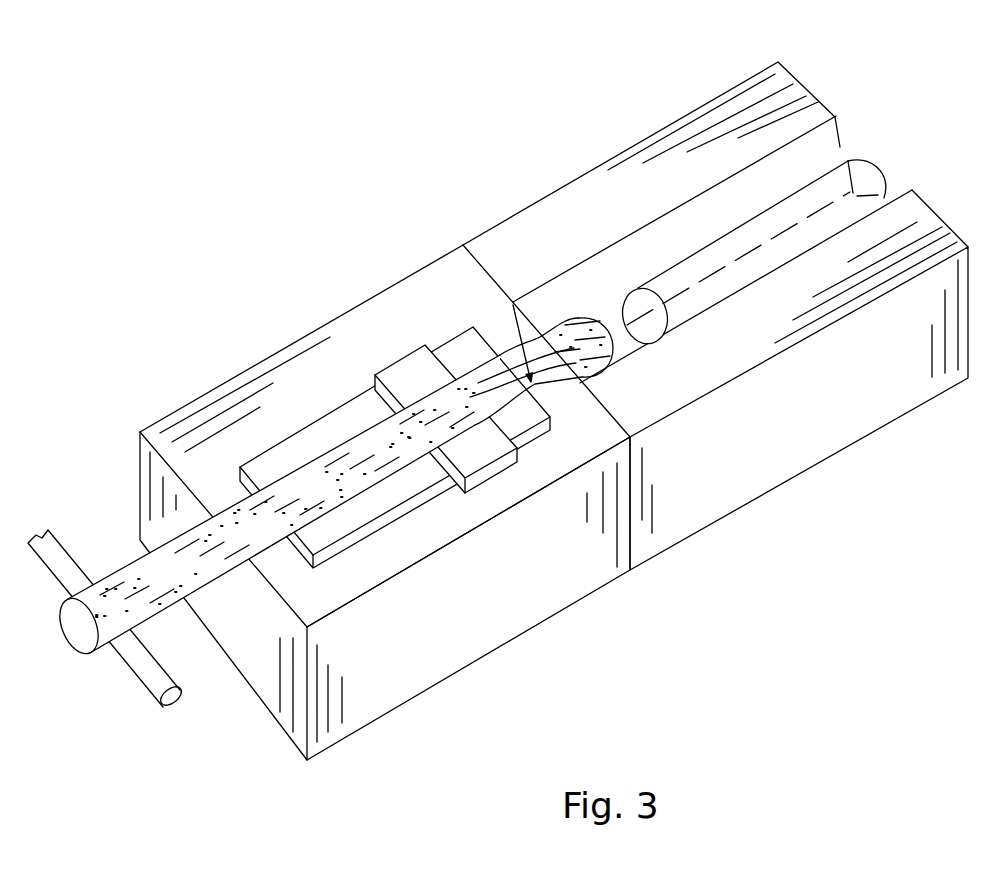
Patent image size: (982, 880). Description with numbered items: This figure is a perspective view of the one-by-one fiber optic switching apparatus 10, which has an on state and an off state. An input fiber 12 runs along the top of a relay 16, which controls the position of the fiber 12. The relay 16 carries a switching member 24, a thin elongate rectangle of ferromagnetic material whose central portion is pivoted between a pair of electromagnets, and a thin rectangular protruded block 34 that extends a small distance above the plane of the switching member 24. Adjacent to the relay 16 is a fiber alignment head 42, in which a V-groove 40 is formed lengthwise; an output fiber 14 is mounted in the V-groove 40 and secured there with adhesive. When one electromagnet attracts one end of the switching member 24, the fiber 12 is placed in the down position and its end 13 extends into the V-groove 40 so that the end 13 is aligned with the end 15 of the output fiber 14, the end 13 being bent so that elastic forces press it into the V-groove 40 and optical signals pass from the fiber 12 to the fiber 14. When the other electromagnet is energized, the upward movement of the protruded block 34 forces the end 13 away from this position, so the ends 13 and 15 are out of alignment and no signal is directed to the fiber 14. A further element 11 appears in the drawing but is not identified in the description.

The fiber optic switching apparatus 10 is at (498, 405).
The optical fiber 11 is at (137, 663).
The input fiber 12 is at (200, 586).
The end of the input fiber 13 is at (566, 316).
The output fiber 14 is at (860, 160).
The end of the output fiber 15 is at (637, 293).
The relay 16 is at (546, 622).
The switching member 24 is at (365, 540).
The protruded block 34 is at (483, 488).
The V-groove 40 is at (703, 222).
The fiber alignment head 42 is at (793, 448).